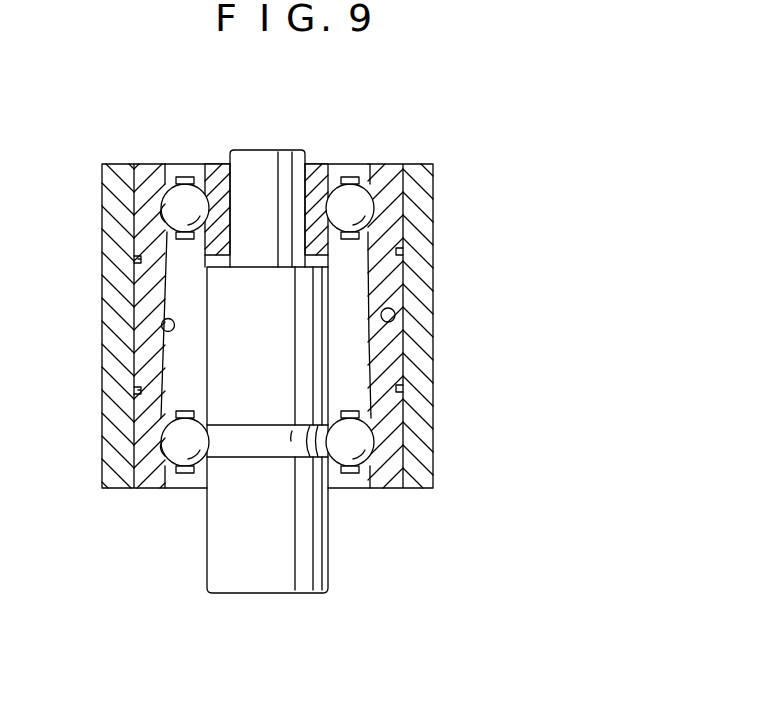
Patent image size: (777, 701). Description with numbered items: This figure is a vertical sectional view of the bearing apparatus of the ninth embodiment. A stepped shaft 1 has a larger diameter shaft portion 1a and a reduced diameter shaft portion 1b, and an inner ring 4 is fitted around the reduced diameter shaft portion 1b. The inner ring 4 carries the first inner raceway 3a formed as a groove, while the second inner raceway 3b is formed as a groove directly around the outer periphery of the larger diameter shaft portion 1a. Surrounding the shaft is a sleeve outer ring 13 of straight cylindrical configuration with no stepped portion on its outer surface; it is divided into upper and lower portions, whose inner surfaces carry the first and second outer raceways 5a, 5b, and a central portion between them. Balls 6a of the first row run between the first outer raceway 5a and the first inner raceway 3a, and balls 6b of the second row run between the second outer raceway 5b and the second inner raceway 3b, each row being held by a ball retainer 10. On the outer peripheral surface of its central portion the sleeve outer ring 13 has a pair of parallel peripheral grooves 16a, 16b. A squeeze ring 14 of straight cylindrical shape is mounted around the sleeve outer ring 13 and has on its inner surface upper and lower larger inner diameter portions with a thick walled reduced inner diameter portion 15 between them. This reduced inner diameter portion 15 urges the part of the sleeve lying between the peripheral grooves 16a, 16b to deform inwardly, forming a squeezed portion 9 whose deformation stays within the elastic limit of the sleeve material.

The stepped shaft 1 is at (267, 376).
The larger diameter shaft portion 1a is at (255, 583).
The reduced diameter shaft portion 1b is at (248, 165).
The first inner raceway 3a is at (200, 178).
The second inner raceway 3b is at (252, 448).
The inner ring 4 is at (222, 164).
The first outer raceway 5a is at (167, 220).
The second outer raceway 5b is at (169, 452).
The balls for the first row 6a is at (163, 196).
The balls for the second row 6b is at (170, 432).
The squeezed portion 9 is at (162, 325).
The ball retainer 10 is at (350, 176).
The sleeve outer ring 13 is at (392, 208).
The squeeze ring 14 is at (420, 250).
The reduced inner diameter portion 15 is at (394, 310).
The peripheral groove 16a is at (134, 258).
The peripheral groove 16b is at (134, 388).